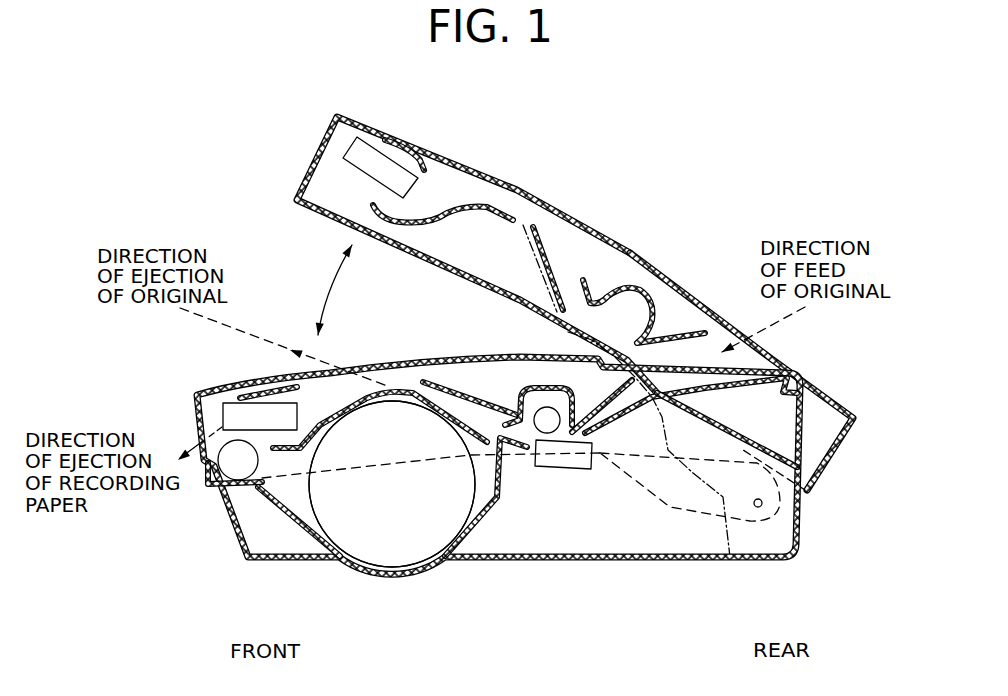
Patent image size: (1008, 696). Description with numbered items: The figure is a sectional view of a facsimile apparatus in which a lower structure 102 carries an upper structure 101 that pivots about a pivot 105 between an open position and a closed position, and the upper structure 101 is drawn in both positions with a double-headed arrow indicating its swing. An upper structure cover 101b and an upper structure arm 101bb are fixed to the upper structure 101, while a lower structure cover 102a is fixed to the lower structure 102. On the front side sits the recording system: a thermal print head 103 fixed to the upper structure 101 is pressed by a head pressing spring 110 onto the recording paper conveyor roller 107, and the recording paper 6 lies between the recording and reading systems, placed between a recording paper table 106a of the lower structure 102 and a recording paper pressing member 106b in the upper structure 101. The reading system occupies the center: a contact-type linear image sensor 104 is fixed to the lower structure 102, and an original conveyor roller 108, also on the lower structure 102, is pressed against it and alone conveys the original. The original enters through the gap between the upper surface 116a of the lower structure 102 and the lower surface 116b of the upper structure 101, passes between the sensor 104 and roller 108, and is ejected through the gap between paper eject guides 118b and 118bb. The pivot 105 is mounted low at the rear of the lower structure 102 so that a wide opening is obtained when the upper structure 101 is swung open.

The upper structure 101 is at (497, 184).
The upper structure cover 101b is at (610, 239).
The upper structure arm 101bb is at (730, 557).
The lower structure 102 is at (657, 535).
The lower structure cover 102a is at (517, 555).
The thermal print head 103 is at (345, 153).
The linear image sensor 104 is at (575, 470).
The pivot 105 is at (762, 506).
The recording paper table 106a is at (420, 548).
The recording paper pressing member 106b is at (393, 394).
The recording paper conveyor roller 107 is at (240, 470).
The original conveyor roller 108 is at (543, 416).
The head pressing spring 110 is at (424, 158).
The upper surface of the lower structure 116a is at (740, 405).
The lower surface of the upper structure 116b is at (577, 428).
The paper eject guide 118b is at (457, 390).
The paper eject guide 118bb is at (444, 427).
The recording paper 6 is at (350, 533).